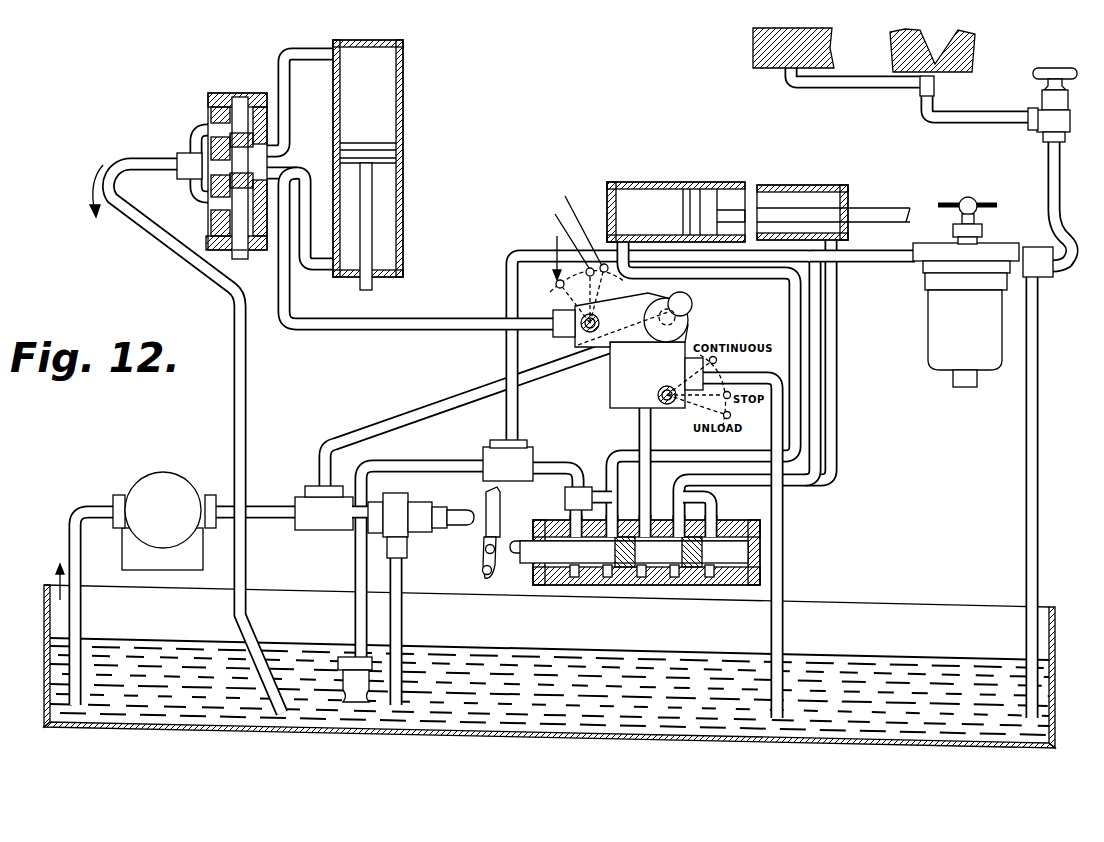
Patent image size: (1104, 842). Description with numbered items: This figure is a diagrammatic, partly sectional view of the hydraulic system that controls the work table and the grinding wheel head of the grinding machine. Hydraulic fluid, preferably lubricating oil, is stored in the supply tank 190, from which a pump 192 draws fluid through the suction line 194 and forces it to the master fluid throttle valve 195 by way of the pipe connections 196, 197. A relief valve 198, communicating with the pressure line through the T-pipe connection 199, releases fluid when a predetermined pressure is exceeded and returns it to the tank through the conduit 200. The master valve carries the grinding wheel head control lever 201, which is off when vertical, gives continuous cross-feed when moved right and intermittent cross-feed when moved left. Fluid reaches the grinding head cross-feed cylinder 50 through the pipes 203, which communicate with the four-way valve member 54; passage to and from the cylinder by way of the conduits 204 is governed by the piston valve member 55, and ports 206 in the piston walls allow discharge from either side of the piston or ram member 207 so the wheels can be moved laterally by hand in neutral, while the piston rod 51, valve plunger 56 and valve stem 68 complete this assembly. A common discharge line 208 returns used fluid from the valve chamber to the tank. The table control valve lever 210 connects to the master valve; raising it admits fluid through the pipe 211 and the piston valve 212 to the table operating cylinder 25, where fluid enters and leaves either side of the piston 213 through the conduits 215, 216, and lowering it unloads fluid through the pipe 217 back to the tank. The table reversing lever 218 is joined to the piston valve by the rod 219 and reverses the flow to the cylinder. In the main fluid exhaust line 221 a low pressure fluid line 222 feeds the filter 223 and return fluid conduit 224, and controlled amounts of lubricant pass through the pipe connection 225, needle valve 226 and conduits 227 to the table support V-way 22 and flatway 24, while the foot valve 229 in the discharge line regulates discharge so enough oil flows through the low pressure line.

The table support V-way 22 is at (940, 32).
The flatway 24 is at (782, 30).
The table operating cylinder 25 is at (808, 185).
The grinding head cross-feed cylinder 50 is at (405, 73).
The piston rod 51 is at (358, 291).
The four-way valve member 54 is at (214, 222).
The piston valve member 55 is at (228, 133).
The valve plunger 56 is at (245, 128).
The valve stem 68 is at (241, 254).
The supply tank 190 is at (93, 728).
The pump 192 is at (164, 480).
The suction line 194 is at (80, 612).
The master fluid throttle valve 195 is at (615, 382).
The pipe connection 196 is at (262, 506).
The pipe connection 197 is at (450, 403).
The relief valve 198 is at (424, 488).
The T-pipe connection 199 is at (324, 530).
The conduit 200 is at (400, 573).
The grinding wheel head control lever 201 is at (558, 266).
The pipes 203 is at (436, 318).
The conduits 204 is at (332, 45).
The ports 206 is at (210, 157).
The piston or ram member 207 is at (366, 150).
The common discharge line 208 is at (158, 236).
The table control valve lever 210 is at (680, 408).
The pipe 211 is at (641, 421).
The piston valve 212 is at (650, 570).
The piston 213 is at (687, 213).
The conduit 215 is at (800, 310).
The conduit 216 is at (836, 314).
The pipe 217 is at (783, 513).
The table reversing lever 218 is at (500, 530).
The rod 219 is at (520, 556).
The main fluid exhaust line 221 is at (437, 463).
The low pressure fluid line 222 is at (506, 353).
The filter 223 is at (930, 340).
The return fluid conduit 224 is at (1030, 403).
The pipe connection 225 is at (1048, 178).
The needle valve 226 is at (1030, 100).
The conduits 227 is at (926, 118).
The foot valve 229 is at (328, 662).